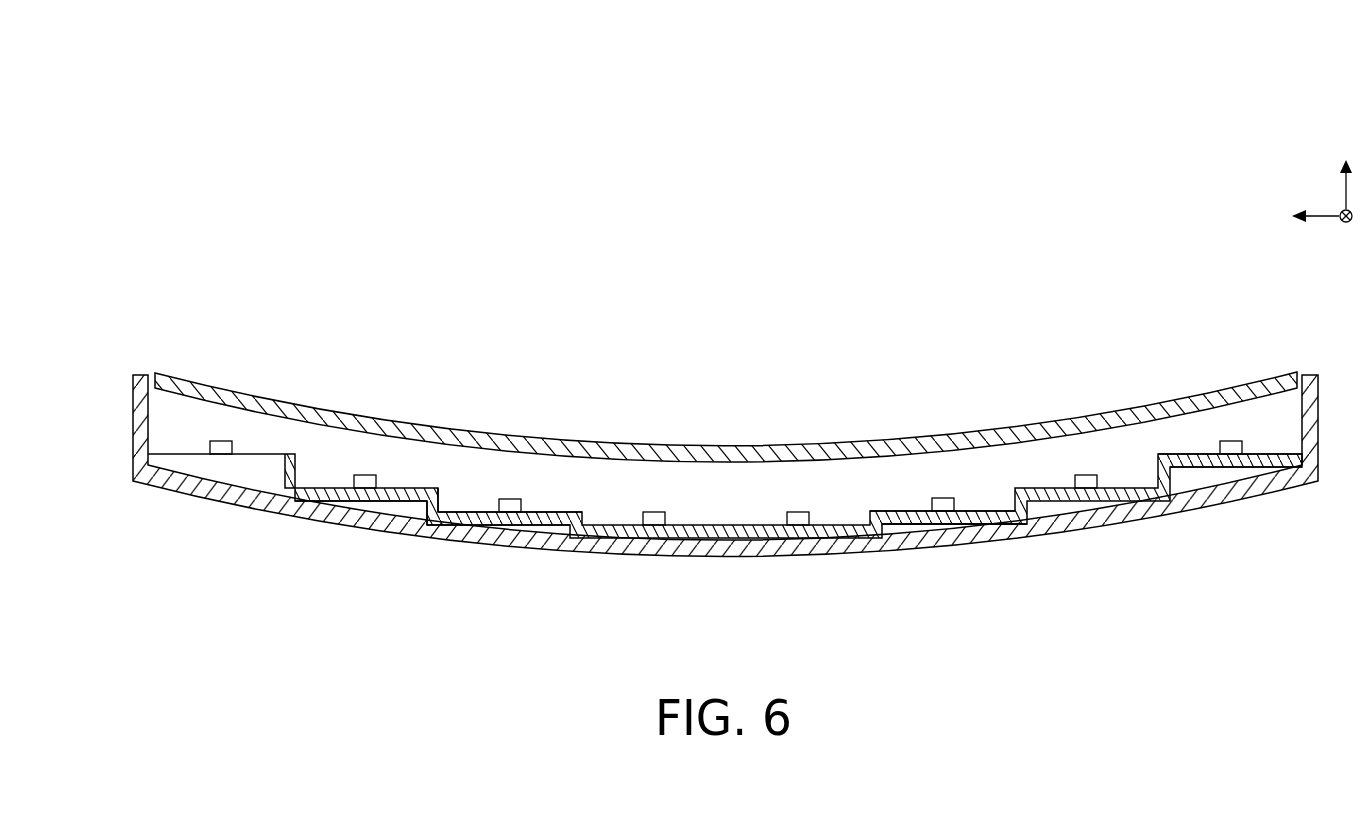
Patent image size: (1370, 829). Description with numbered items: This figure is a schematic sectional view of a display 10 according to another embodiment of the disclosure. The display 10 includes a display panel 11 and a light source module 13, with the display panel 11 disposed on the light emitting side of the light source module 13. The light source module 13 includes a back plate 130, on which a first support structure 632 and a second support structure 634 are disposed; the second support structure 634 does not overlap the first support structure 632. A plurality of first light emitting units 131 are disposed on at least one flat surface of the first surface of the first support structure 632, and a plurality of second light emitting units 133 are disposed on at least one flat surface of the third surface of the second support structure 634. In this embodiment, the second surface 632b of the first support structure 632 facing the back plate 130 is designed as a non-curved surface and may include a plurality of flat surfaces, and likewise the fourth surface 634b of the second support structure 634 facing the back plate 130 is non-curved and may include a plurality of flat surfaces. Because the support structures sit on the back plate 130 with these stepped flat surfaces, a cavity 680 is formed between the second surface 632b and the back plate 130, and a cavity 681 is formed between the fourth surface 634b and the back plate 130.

The display 10 is at (112, 284).
The display panel 11 is at (1213, 398).
The light source module 13 is at (1200, 528).
The back plate 130 is at (855, 543).
The first light emitting units 131 is at (943, 501).
The second light emitting units 133 is at (365, 479).
The first support structure 632 is at (967, 518).
The second surface 632b is at (1237, 470).
The second support structure 634 is at (430, 509).
The fourth surface 634b is at (538, 524).
The cavity 680 is at (1047, 506).
The cavity 681 is at (384, 506).